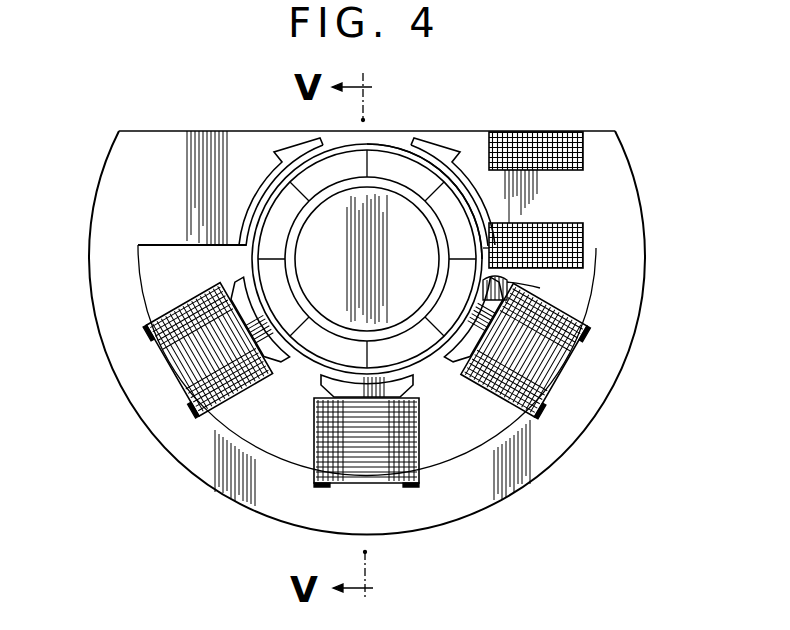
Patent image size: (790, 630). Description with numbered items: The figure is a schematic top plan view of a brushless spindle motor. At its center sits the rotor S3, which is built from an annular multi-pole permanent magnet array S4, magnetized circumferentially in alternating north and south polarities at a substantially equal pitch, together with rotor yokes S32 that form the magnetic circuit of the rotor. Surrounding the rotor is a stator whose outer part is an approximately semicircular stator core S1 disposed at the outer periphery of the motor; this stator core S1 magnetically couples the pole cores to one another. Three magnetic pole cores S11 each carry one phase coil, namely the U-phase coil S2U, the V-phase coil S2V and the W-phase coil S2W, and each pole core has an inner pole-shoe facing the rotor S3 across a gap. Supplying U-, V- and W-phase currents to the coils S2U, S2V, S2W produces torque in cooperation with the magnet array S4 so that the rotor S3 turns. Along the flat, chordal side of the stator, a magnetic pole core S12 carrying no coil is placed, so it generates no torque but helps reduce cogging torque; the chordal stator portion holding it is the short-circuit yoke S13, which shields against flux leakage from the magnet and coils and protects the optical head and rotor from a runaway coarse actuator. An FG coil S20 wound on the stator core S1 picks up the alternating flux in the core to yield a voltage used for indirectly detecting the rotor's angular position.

The stator core S1 is at (622, 205).
The three-phase magnetic pole cores S11 is at (507, 282).
The magnetic pole core having no coil S12 is at (395, 140).
The short-circuit yoke S13 is at (455, 143).
The FG coil S20 is at (558, 132).
The U-phase coil S2U is at (190, 373).
The V-phase coil S2V is at (378, 485).
The W-phase coil S2W is at (550, 357).
The rotor S3 is at (283, 160).
The rotor yokes S32 is at (318, 318).
The multi-pole permanent magnet array S4 is at (415, 340).